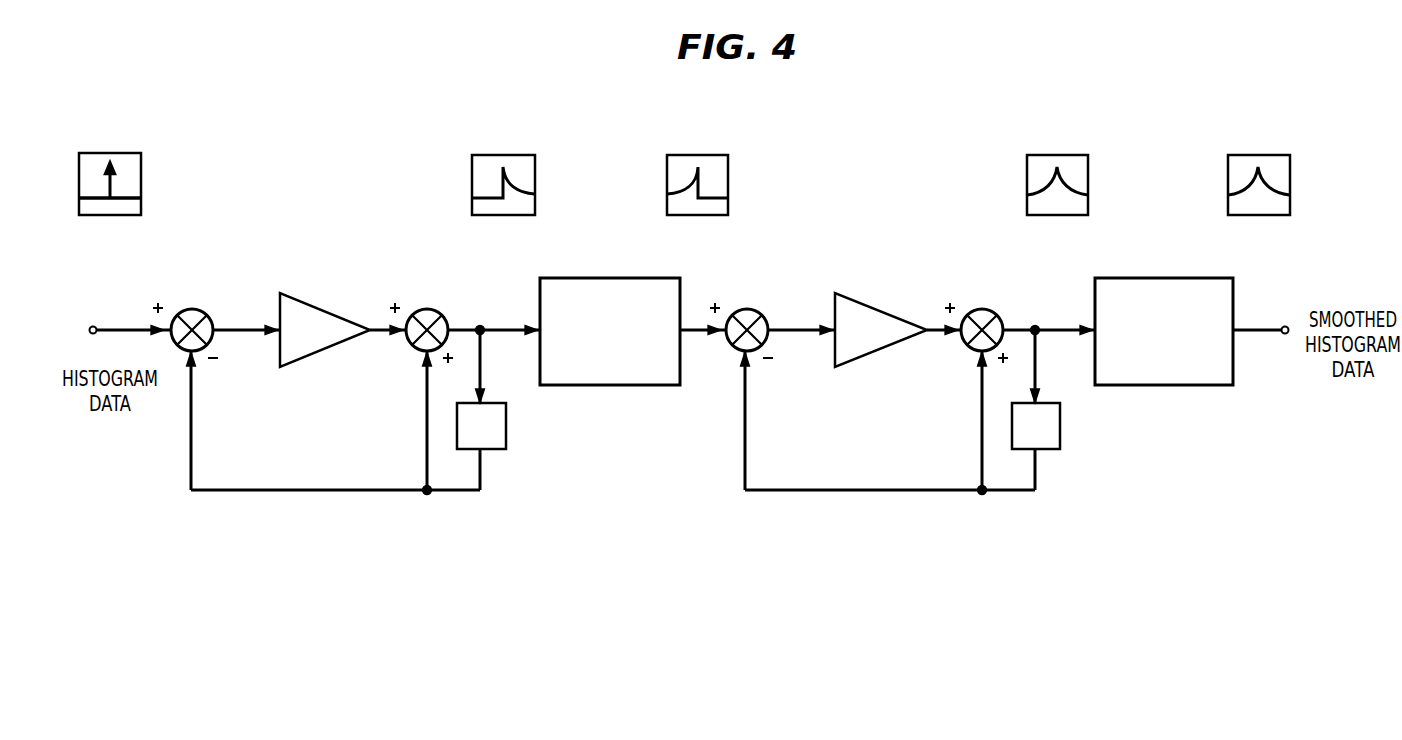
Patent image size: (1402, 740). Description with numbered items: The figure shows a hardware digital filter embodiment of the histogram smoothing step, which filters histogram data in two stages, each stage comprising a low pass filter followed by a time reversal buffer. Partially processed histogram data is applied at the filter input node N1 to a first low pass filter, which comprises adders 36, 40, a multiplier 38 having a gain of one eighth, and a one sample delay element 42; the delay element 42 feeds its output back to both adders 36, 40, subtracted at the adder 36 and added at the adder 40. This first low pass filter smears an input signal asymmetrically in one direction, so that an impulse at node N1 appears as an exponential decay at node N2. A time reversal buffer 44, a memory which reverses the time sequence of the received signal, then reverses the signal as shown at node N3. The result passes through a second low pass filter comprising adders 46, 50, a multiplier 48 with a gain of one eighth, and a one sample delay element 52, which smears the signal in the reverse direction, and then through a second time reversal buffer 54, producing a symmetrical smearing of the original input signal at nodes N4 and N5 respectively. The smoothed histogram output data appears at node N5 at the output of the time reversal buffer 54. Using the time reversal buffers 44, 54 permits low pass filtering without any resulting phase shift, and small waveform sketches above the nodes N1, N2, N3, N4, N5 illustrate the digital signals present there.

The adder 36 is at (190, 309).
The multiplier 38 is at (310, 298).
The adder 40 is at (425, 309).
The one sample delay element 42 is at (506, 422).
The time reversal buffer 44 is at (620, 278).
The adder 46 is at (745, 309).
The multiplier 48 is at (862, 298).
The adder 50 is at (980, 309).
The one sample delay element 52 is at (1060, 422).
The time reversal buffer 54 is at (1175, 278).
The circuit node N1 is at (122, 327).
The circuit node N2 is at (497, 327).
The circuit node N3 is at (690, 327).
The circuit node N4 is at (1052, 327).
The circuit node N5 is at (1255, 327).